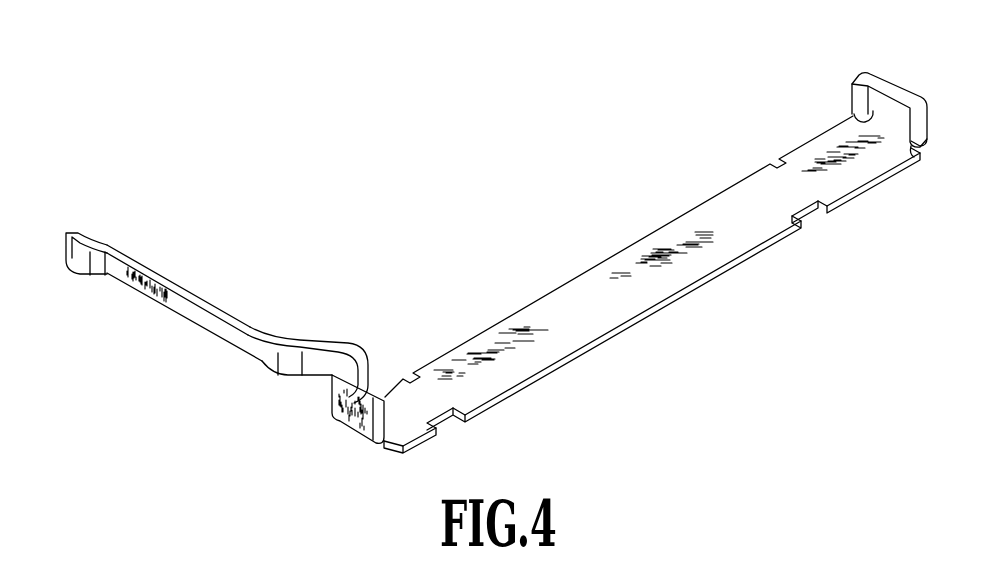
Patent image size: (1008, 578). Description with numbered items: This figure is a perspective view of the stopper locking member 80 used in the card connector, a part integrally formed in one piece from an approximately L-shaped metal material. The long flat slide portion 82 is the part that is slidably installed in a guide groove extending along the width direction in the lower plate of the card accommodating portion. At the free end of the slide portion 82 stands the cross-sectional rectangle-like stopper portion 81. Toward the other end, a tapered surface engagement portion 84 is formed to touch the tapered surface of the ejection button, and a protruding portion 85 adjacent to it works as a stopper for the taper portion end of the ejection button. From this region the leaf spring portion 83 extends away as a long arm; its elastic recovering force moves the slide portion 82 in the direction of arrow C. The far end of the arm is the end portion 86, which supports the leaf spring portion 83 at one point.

The stopper locking member 80 is at (542, 214).
The stopper portion 81 is at (890, 99).
The slide portion 82 is at (729, 242).
The leaf spring portion 83 is at (189, 311).
The tapered surface engagement portion 84 is at (364, 433).
The protruding portion 85 is at (354, 343).
The end portion 86 is at (73, 259).